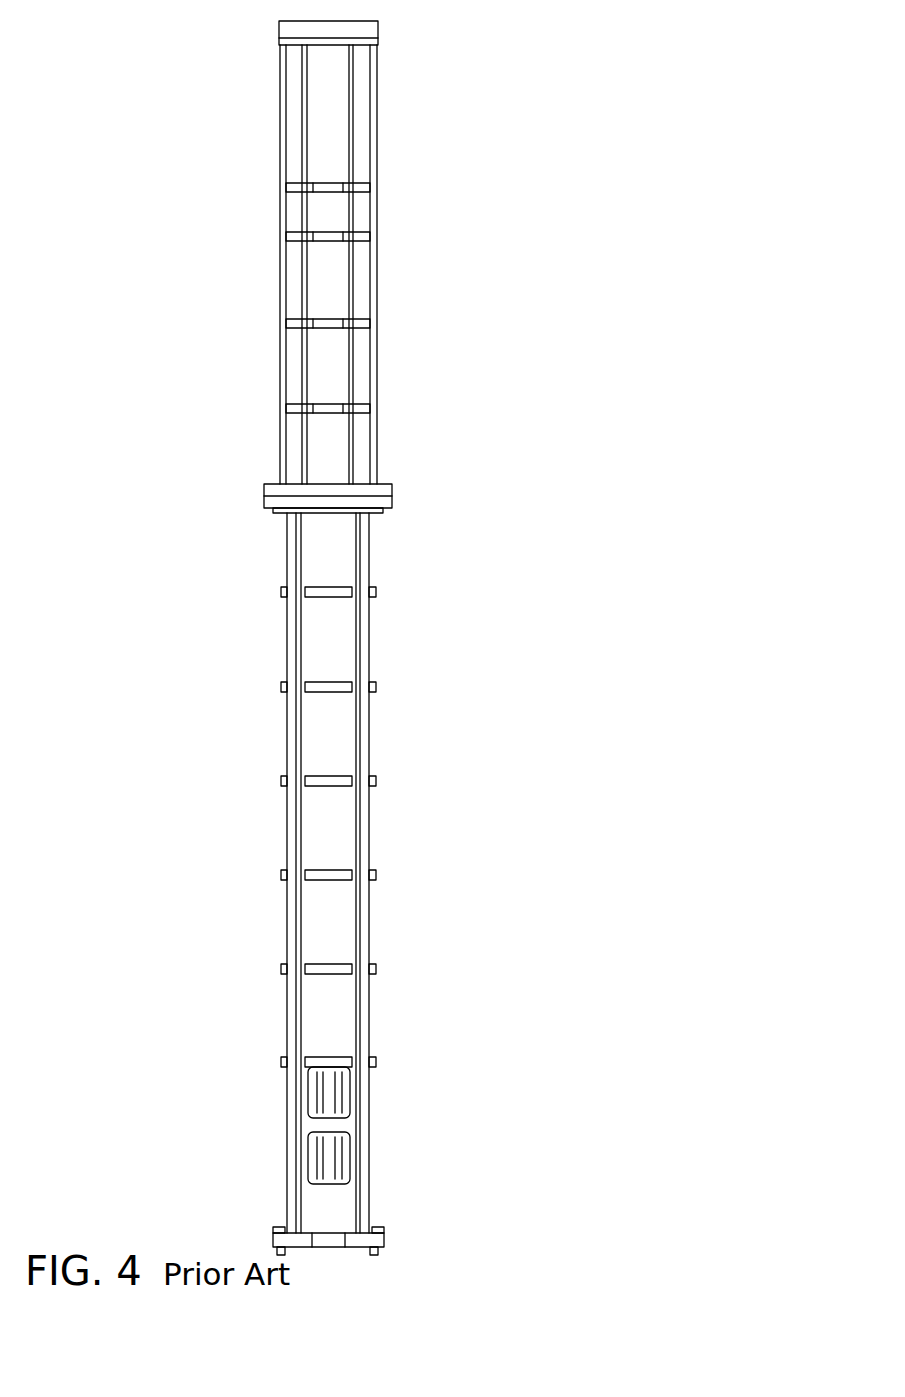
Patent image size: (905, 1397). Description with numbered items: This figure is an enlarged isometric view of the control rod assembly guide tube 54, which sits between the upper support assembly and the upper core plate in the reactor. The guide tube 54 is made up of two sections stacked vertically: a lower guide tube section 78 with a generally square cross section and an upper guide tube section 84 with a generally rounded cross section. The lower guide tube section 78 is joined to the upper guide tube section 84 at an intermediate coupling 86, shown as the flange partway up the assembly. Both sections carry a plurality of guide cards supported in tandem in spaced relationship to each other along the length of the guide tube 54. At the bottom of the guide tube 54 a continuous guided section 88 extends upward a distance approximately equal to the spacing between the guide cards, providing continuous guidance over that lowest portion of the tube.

The control rod assembly guide tube 54 is at (503, 108).
The lower guide tube section 78 is at (405, 497).
The upper guide tube section 84 is at (404, 19).
The intermediate coupling 86 is at (264, 500).
The continuous guided section 88 is at (272, 1043).